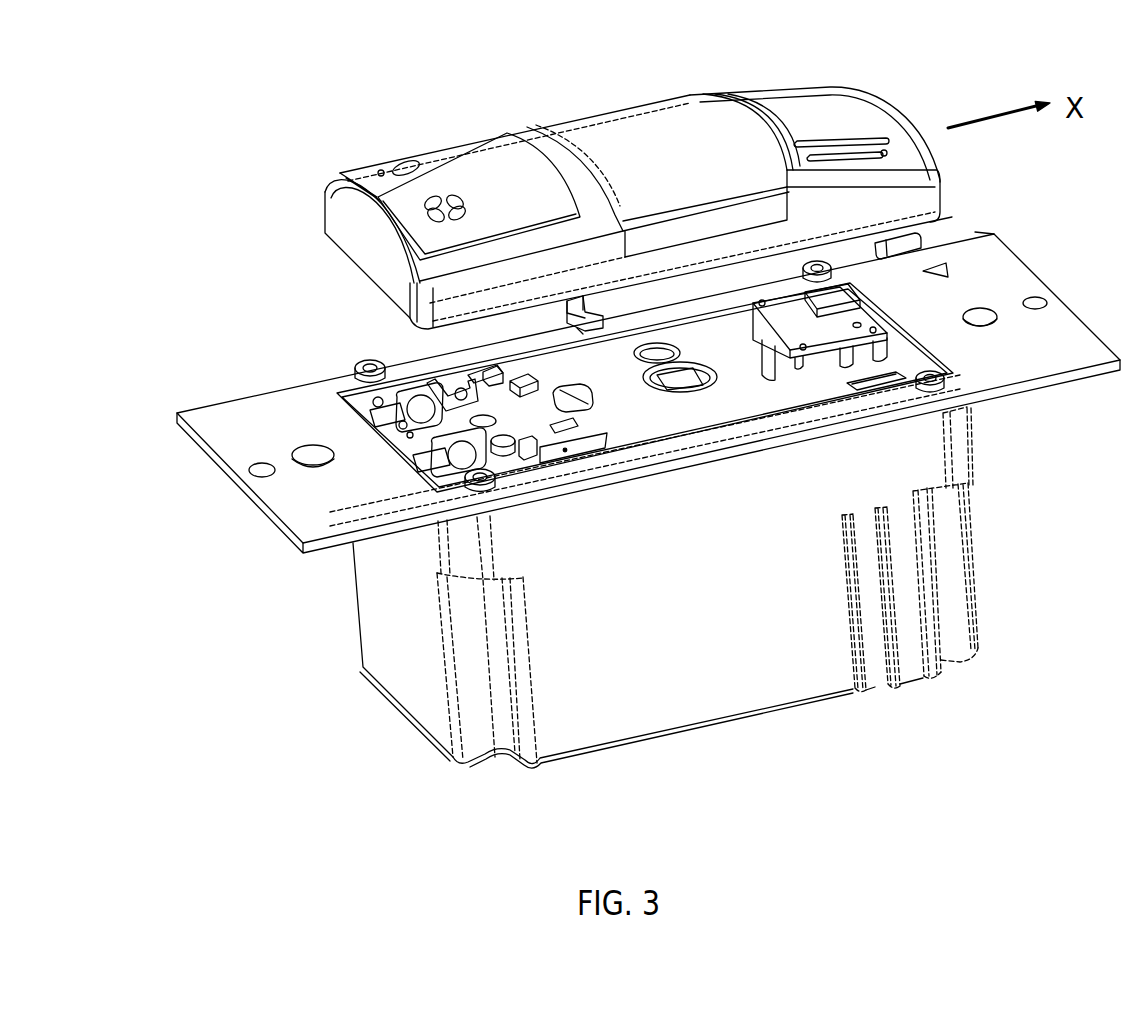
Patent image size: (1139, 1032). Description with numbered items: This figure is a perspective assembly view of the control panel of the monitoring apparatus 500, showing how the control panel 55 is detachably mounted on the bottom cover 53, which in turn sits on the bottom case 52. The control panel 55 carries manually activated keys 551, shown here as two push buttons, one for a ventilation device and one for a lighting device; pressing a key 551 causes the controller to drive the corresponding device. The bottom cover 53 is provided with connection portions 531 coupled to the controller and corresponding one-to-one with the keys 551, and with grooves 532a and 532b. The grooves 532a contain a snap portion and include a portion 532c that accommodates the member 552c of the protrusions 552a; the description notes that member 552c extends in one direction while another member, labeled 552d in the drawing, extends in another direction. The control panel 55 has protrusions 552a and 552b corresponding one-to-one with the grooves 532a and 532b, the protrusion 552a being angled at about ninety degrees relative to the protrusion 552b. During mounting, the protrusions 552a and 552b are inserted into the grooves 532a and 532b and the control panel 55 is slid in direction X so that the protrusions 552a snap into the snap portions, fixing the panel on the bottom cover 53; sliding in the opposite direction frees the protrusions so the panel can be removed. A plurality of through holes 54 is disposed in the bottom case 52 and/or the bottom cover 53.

The monitoring apparatus 500 is at (304, 113).
The control panel 55 is at (647, 133).
The keys 551 is at (460, 193).
The through holes 54 is at (873, 152).
The protrusion 552a is at (592, 307).
The protrusion 552b is at (920, 234).
The member 552c is at (590, 336).
The cover engaging portion 552d is at (975, 232).
The bottom cover 53 is at (1023, 333).
The connection portions 531 is at (497, 437).
The grooves 532a is at (487, 362).
The grooves 532b is at (890, 373).
The portion 532c is at (470, 371).
The bottom case 52 is at (897, 557).